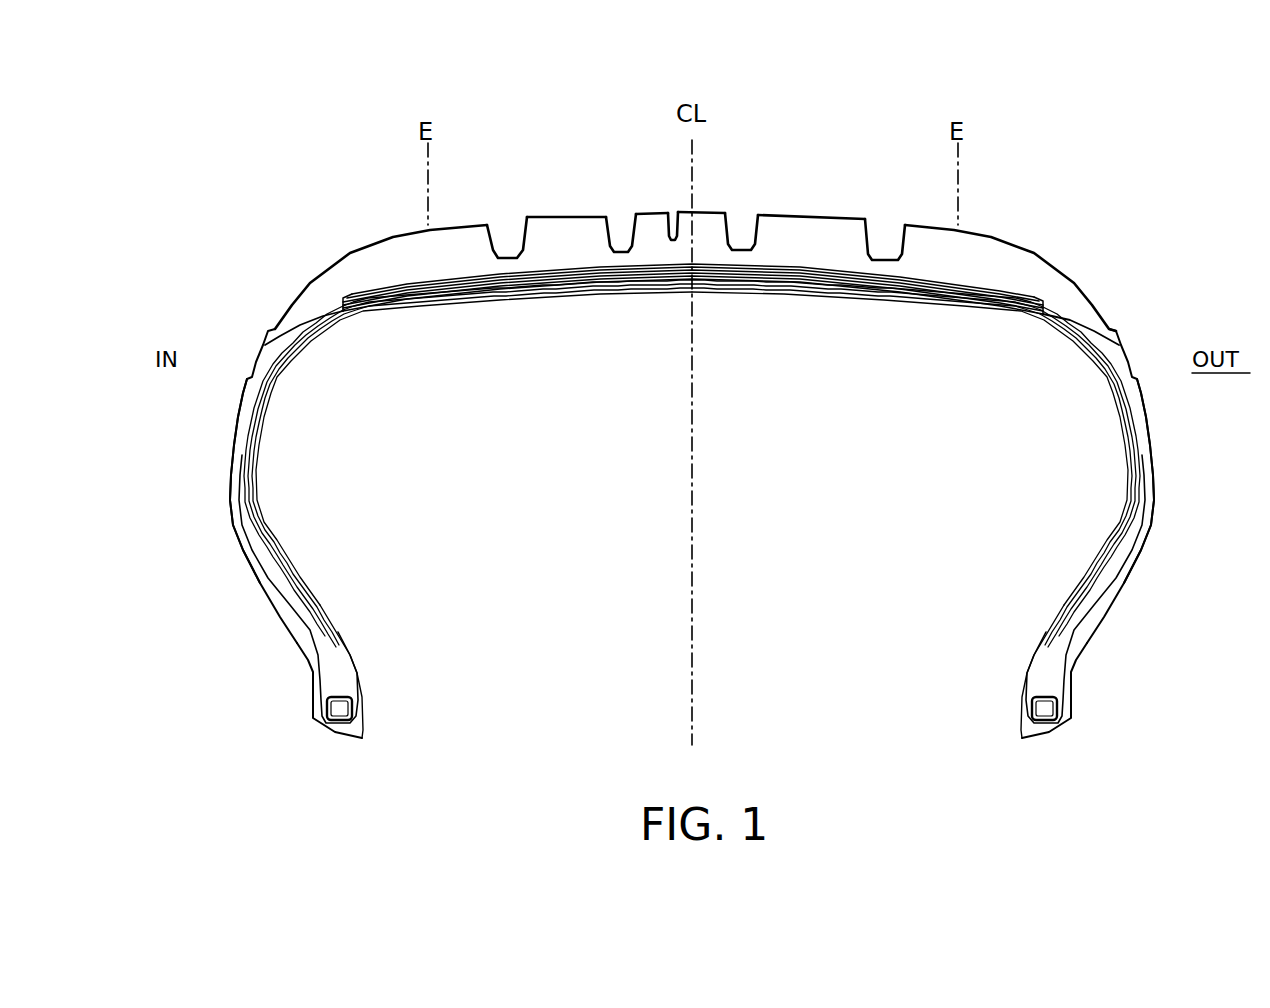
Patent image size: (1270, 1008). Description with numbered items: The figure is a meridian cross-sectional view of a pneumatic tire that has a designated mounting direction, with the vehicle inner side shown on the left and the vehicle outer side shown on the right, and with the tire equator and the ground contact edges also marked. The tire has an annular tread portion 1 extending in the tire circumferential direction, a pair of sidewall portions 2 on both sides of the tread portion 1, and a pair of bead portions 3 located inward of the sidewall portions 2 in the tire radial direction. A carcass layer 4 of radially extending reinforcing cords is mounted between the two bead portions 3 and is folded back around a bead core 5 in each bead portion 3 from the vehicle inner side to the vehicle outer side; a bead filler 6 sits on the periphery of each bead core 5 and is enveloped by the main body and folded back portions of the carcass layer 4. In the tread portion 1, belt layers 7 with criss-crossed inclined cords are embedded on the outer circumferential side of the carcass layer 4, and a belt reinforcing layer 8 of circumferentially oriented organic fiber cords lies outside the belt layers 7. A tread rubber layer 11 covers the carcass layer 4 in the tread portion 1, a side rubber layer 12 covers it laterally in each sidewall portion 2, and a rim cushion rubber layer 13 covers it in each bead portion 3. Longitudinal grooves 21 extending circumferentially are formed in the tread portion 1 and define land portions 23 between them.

The tread portion 1 is at (760, 164).
The sidewall portion 2 is at (221, 483).
The bead portion 3 is at (301, 711).
The carcass layer 4 is at (1103, 393).
The bead core 5 is at (345, 710).
The bead filler 6 is at (333, 654).
The belt layer 7 is at (822, 281).
The belt reinforcing layer 8 is at (926, 299).
The tread rubber layer 11 is at (968, 236).
The side rubber layer 12 is at (232, 445).
The rim cushion rubber layer 13 is at (300, 656).
The longitudinal groove 21 is at (512, 250).
The land portion 23 is at (447, 226).